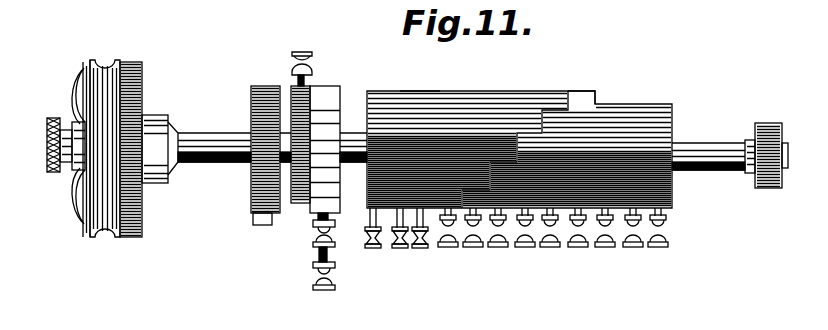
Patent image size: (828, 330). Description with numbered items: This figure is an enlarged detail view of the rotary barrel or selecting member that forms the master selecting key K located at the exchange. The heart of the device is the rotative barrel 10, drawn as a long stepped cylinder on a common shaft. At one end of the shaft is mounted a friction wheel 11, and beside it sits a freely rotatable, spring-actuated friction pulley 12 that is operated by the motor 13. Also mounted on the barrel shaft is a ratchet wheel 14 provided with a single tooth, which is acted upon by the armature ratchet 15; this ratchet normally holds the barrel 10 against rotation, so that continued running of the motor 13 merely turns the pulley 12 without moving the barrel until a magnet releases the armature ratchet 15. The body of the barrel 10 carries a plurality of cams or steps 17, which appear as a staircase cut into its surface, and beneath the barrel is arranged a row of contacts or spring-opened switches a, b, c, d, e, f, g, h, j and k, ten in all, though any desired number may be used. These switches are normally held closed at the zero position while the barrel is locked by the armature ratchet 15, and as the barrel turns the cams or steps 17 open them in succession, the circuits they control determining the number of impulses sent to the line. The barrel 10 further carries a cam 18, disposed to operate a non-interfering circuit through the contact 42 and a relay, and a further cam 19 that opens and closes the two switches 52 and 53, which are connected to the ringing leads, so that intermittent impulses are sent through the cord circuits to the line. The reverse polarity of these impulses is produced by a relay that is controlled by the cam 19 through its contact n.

The rotative barrel 10 is at (478, 78).
The friction wheel 11 is at (130, 237).
The friction pulley 12 is at (90, 237).
The motor 13 is at (516, 278).
The ratchet wheel 14 is at (250, 66).
The armature ratchet 15 is at (253, 223).
The cams or steps 17 is at (590, 76).
The cam 18 is at (292, 88).
The cam 19 is at (323, 90).
The contact 42 is at (315, 50).
The switch 52 is at (315, 280).
The switch 53 is at (312, 242).
The master selecting key K is at (432, 73).
The spring opened switch a is at (658, 239).
The spring opened switch b is at (633, 239).
The spring opened switch c is at (605, 239).
The spring opened switch d is at (578, 239).
The spring opened switch e is at (550, 239).
The spring opened switch f is at (525, 239).
The spring opened switch g is at (498, 239).
The spring opened switch h is at (473, 239).
The spring opened switch j is at (448, 239).
The spring opened switch k is at (420, 239).
The contact n is at (373, 239).